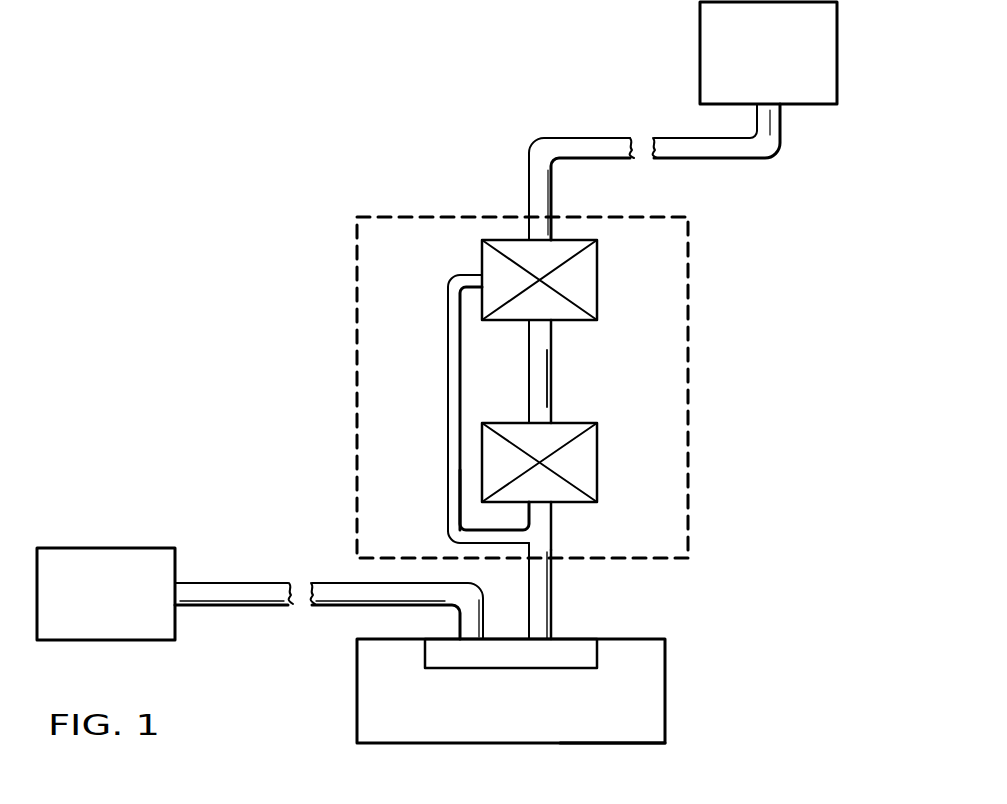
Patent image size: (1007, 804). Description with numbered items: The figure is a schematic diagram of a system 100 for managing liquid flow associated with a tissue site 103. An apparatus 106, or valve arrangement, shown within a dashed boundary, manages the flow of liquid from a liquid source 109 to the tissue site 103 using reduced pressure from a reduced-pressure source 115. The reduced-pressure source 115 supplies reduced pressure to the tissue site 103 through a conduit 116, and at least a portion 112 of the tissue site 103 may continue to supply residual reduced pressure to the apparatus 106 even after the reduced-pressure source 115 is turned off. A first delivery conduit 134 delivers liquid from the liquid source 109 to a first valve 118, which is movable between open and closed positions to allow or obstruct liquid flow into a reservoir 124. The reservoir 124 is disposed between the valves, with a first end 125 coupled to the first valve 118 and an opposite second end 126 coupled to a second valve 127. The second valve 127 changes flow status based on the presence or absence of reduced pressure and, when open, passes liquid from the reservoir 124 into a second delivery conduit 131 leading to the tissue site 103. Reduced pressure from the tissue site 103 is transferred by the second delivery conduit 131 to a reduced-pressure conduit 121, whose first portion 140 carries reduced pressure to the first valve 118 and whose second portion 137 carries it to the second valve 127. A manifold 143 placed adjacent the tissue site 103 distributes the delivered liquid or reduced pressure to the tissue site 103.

The system 100 is at (344, 106).
The tissue site 103 is at (450, 673).
The apparatus 106 is at (356, 251).
The liquid source 109 is at (790, 69).
The portion of the tissue site 112 is at (573, 673).
The reduced-pressure source 115 is at (128, 610).
The conduit 116 is at (231, 582).
The first valve 118 is at (597, 273).
The reduced-pressure conduit 121 is at (448, 462).
The reservoir 124 is at (552, 367).
The first end 125 is at (540, 322).
The second end 126 is at (540, 421).
The second valve 127 is at (597, 468).
The second delivery conduit 131 is at (551, 590).
The first delivery conduit 134 is at (578, 137).
The second portion 137 is at (541, 517).
The first portion 140 is at (448, 356).
The manifold 143 is at (516, 660).